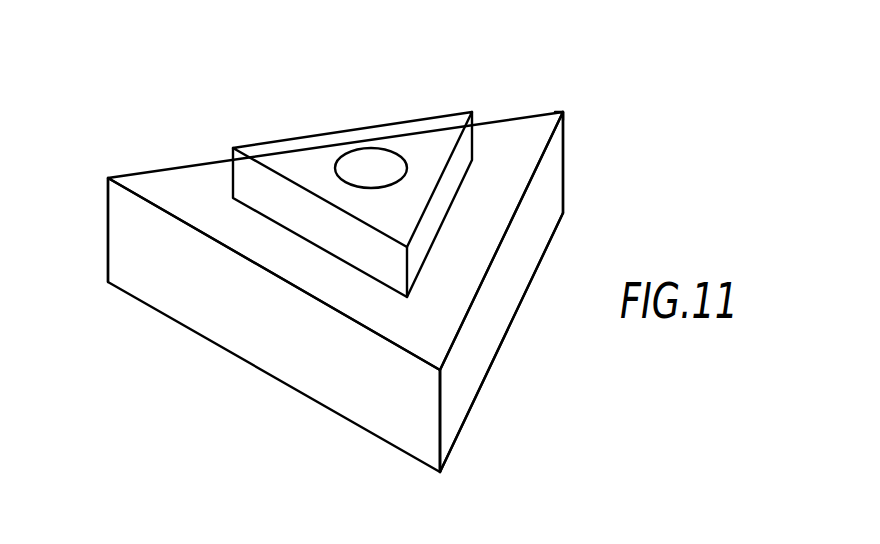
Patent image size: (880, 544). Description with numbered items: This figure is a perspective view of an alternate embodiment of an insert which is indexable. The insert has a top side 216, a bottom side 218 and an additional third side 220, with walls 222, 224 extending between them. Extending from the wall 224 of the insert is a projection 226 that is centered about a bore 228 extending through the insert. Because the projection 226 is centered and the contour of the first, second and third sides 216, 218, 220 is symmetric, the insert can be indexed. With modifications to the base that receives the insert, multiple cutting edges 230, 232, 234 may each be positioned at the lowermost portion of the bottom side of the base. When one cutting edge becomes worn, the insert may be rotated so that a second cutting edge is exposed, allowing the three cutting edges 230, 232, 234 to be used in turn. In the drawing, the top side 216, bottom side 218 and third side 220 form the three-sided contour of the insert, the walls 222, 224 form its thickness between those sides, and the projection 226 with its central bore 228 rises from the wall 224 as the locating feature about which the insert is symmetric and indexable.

The top side 216 is at (538, 110).
The bottom side 218 is at (503, 318).
The third side 220 is at (210, 325).
The wall 222 is at (468, 420).
The wall 224 is at (517, 175).
The projection 226 is at (283, 150).
The bore 228 is at (370, 160).
The cutting edge 230 is at (563, 157).
The cutting edge 232 is at (440, 438).
The cutting edge 234 is at (108, 231).